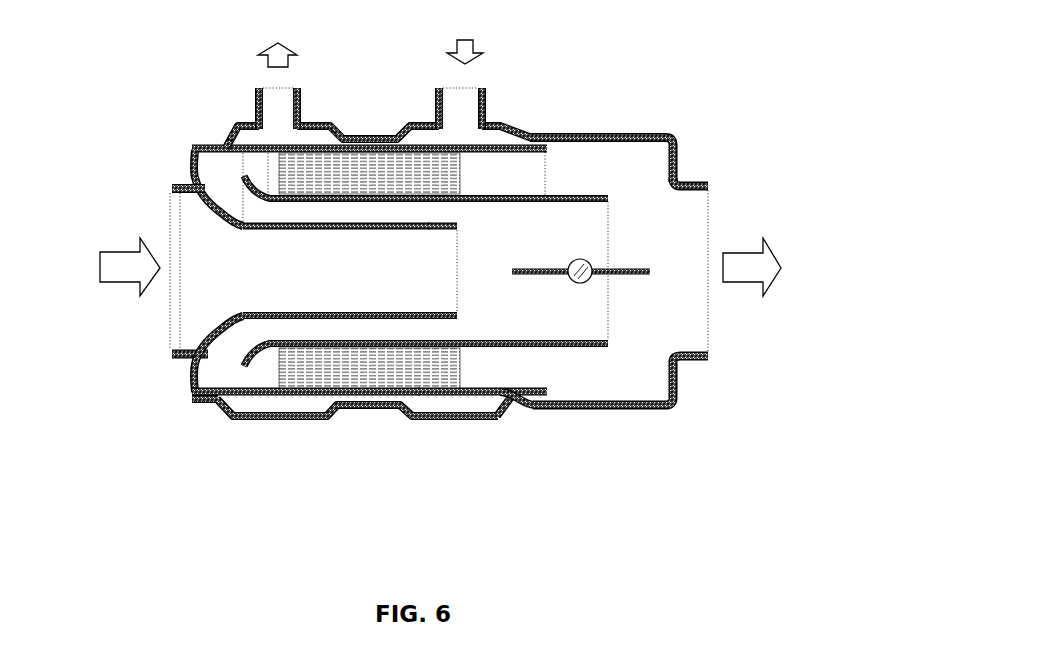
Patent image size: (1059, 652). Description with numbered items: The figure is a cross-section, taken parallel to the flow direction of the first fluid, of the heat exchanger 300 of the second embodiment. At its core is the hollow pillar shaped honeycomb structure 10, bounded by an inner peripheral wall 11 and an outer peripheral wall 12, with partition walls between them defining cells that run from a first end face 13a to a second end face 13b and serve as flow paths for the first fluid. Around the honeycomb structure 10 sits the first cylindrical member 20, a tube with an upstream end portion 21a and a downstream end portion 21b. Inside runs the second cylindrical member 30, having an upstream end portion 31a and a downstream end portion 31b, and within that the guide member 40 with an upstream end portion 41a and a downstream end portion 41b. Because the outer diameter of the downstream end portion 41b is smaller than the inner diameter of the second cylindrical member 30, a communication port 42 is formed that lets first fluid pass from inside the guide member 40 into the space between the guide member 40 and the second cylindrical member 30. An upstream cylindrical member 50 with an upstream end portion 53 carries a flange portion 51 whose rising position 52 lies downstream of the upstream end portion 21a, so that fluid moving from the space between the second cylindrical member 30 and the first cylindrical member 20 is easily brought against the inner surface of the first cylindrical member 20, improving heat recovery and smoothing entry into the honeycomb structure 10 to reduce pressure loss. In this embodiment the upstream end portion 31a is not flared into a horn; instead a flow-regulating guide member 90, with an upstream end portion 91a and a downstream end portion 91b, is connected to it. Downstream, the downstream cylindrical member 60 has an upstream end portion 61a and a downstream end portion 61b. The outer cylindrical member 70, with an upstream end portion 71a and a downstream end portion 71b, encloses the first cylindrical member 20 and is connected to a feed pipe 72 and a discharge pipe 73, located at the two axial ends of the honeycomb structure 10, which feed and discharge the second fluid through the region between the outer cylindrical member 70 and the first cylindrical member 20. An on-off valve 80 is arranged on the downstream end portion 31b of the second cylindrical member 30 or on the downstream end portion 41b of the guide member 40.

The heat exchanger 300 is at (407, 293).
The hollow pillar shaped honeycomb structure 10 is at (367, 368).
The inner peripheral wall 11 is at (315, 348).
The outer peripheral wall 12 is at (387, 394).
The first end face 13a is at (273, 368).
The second end face 13b is at (458, 328).
The first cylindrical member 20 is at (490, 395).
The upstream end portion 21a is at (193, 392).
The downstream end portion 21b is at (590, 403).
The second cylindrical member 30 is at (508, 197).
The upstream end portion 31a is at (242, 226).
The downstream end portion 31b is at (608, 198).
The guide member 40 is at (233, 218).
The upstream end portion 41a is at (171, 190).
The downstream end portion 41b is at (458, 228).
The communication port 42 is at (512, 394).
The upstream cylindrical member 50 is at (193, 180).
The flange portion 51 is at (193, 158).
The rising position 52 is at (197, 185).
The upstream end portion 53 is at (172, 352).
The downstream cylindrical member 60 is at (678, 160).
The upstream end portion 61a is at (530, 140).
The downstream end portion 61b is at (708, 188).
The outer cylindrical member 70 is at (270, 420).
The upstream end portion 71a is at (190, 397).
The downstream end portion 71b is at (560, 404).
The feed pipe 72 is at (483, 108).
The discharge pipe 73 is at (300, 110).
The on-off valve 80 is at (587, 281).
The flow-regulating guide member 90 is at (246, 180).
The upstream end portion 91a is at (258, 190).
The downstream end portion 91b is at (280, 190).